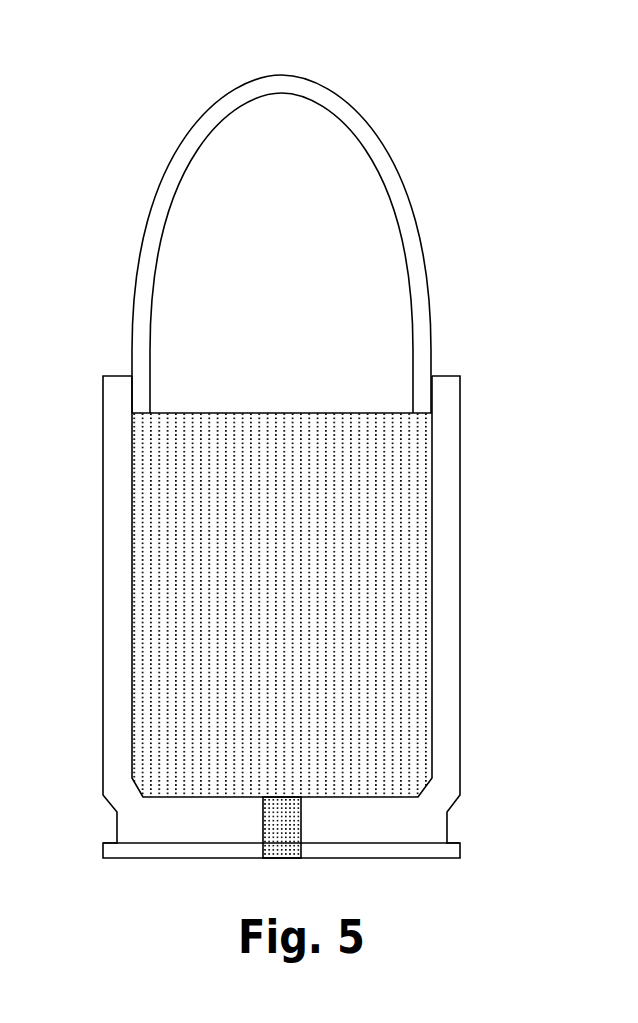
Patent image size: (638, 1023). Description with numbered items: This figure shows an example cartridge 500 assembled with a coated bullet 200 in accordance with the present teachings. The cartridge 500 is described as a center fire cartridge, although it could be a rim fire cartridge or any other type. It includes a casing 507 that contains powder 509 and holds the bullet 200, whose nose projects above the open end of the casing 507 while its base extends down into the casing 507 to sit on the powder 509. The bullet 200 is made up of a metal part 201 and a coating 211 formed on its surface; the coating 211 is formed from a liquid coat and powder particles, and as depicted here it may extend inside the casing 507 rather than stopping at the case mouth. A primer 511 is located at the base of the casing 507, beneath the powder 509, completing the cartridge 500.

The cartridge 500 is at (108, 86).
The bullet 200 is at (397, 154).
The metal part 201 is at (330, 282).
The coating 211 is at (324, 100).
The casing 507 is at (450, 468).
The powder 509 is at (372, 620).
The primer 511 is at (277, 822).